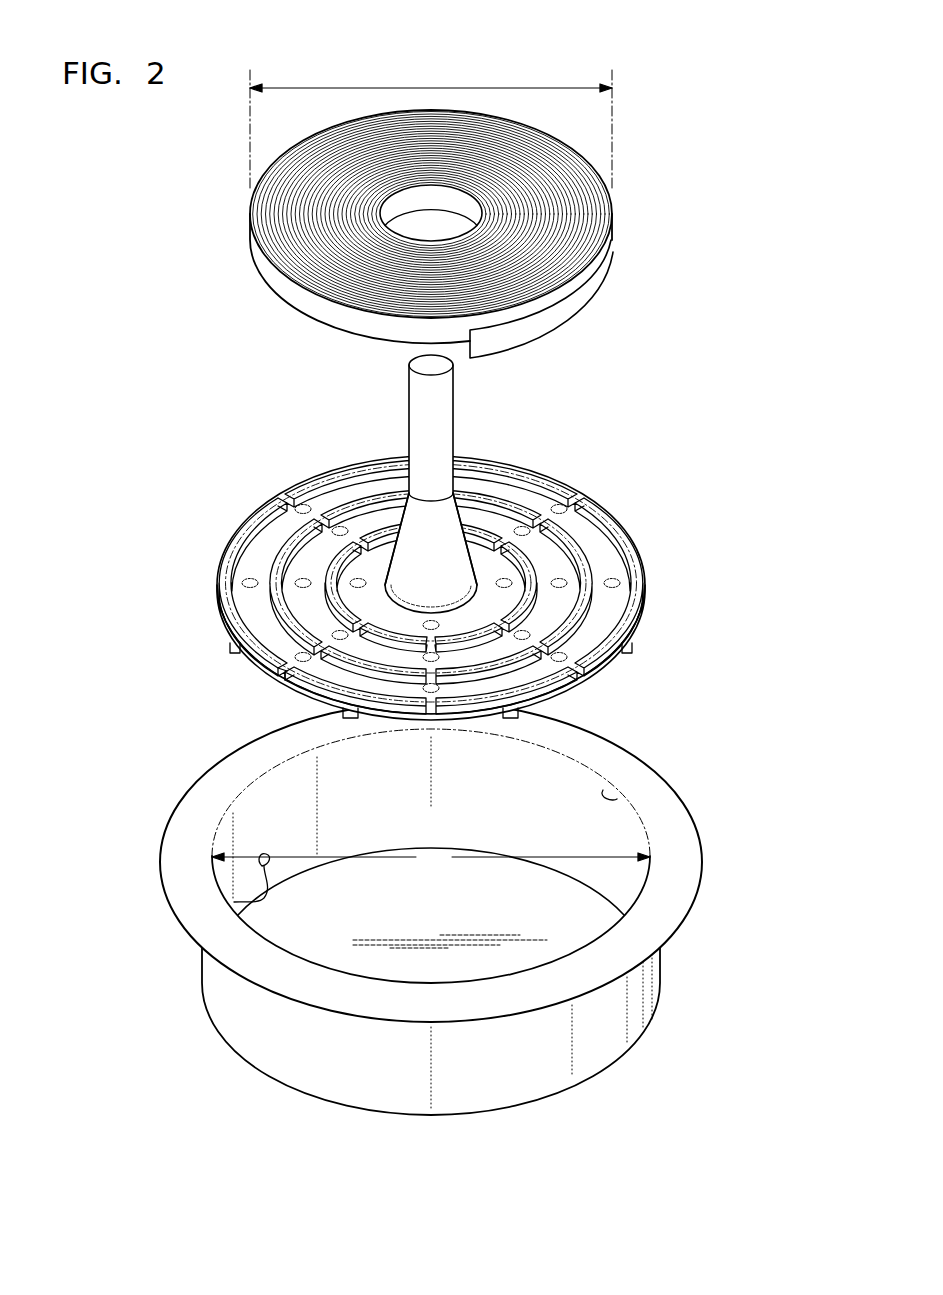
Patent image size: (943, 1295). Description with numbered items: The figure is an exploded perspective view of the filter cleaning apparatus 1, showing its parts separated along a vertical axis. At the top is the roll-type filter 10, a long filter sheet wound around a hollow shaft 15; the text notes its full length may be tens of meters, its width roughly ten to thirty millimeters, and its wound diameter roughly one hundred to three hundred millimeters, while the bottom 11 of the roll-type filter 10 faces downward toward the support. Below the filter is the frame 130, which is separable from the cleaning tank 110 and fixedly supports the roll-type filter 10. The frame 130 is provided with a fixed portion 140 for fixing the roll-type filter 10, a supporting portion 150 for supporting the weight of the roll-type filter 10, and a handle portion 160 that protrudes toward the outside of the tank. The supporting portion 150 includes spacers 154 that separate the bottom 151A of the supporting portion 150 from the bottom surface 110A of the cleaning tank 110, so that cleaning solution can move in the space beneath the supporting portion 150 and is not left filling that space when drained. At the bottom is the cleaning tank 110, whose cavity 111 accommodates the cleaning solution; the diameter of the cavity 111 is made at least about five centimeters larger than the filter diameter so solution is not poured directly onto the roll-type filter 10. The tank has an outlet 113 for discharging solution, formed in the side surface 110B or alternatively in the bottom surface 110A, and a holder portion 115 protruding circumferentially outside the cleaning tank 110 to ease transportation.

The filter cleaning apparatus 1 is at (655, 405).
The roll-type filter 10 is at (477, 221).
The bottom of the roll-type filter 11 is at (312, 318).
The hollow shaft 15 is at (486, 206).
The cleaning tank 110 is at (461, 906).
The bottom surface 110A is at (593, 913).
The side surface 110B is at (603, 790).
The cavity 111 is at (548, 802).
The outlet 113 is at (234, 902).
The holder portion 115 is at (183, 820).
The frame 130 is at (441, 575).
The fixed portion 140 is at (450, 520).
The supporting portion 150 is at (649, 558).
The bottom of the supporting portion 151A is at (279, 670).
The spacer 154 is at (626, 653).
The handle portion 160 is at (440, 402).